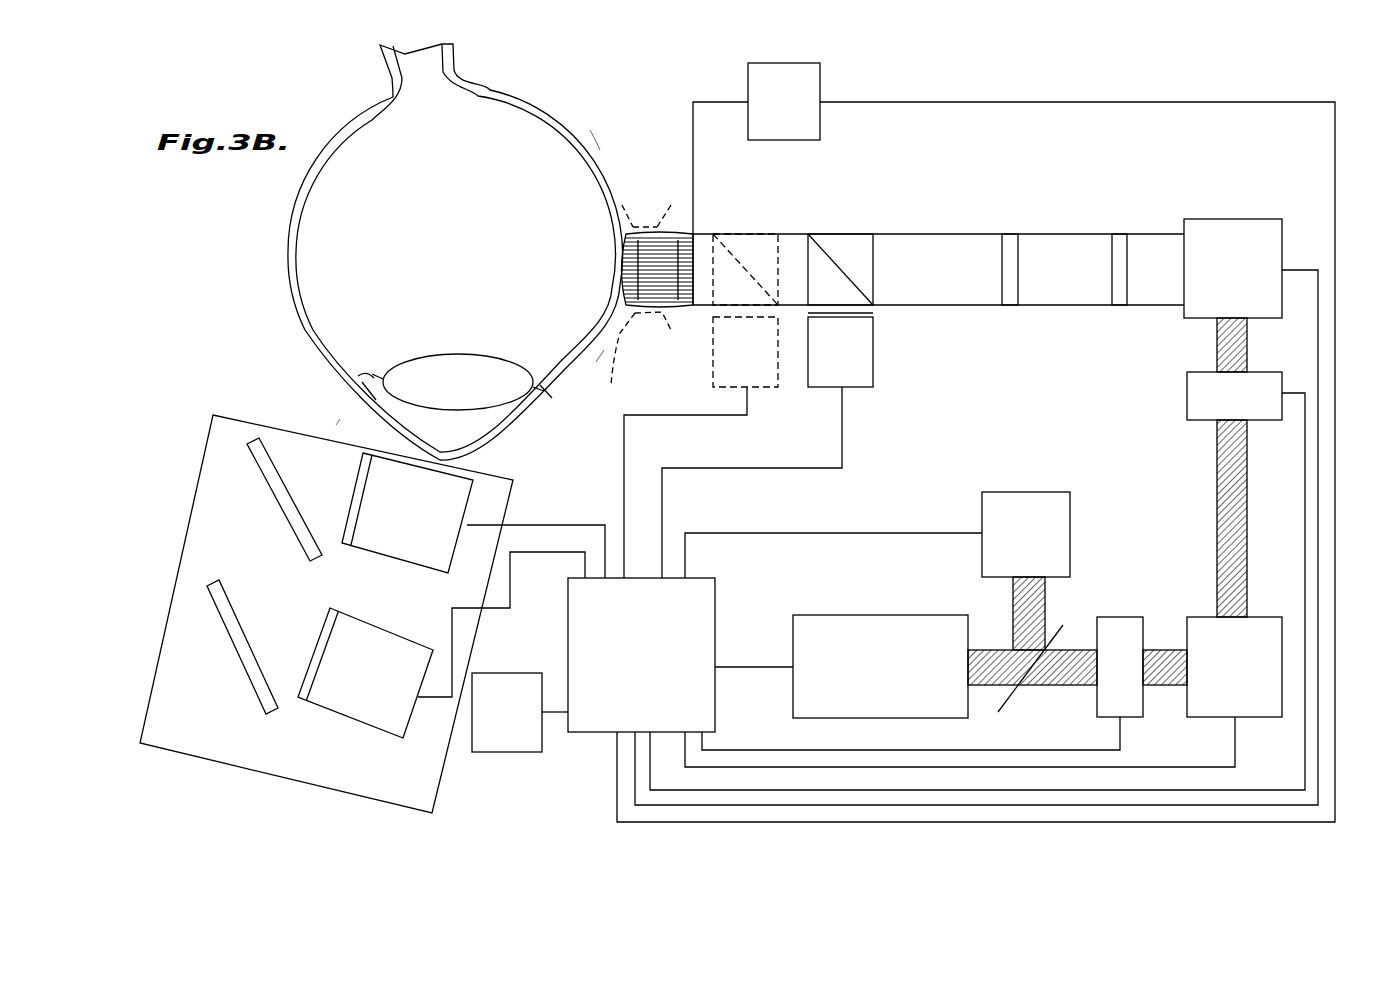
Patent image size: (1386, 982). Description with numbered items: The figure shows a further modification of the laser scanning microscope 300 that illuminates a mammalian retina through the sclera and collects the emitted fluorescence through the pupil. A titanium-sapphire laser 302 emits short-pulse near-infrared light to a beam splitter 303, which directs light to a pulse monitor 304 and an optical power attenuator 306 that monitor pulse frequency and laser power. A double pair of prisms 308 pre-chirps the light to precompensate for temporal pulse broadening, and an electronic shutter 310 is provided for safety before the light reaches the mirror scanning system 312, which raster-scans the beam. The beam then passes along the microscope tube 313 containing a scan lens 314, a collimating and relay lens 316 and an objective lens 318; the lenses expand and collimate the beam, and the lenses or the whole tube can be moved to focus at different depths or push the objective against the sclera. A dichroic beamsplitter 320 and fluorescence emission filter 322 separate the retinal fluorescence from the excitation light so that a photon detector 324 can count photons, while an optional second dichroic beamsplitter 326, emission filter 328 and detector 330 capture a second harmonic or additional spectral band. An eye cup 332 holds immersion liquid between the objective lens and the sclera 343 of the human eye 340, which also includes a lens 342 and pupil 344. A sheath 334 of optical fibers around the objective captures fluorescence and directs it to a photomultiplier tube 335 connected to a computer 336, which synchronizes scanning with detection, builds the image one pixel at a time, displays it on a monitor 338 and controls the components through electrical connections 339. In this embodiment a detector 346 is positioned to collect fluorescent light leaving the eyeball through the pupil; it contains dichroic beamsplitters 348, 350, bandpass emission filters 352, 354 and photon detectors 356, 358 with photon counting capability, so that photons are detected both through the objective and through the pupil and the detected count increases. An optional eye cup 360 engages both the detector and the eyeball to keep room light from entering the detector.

The laser scanning microscope 300 is at (1235, 92).
The titanium-sapphire laser 302 is at (877, 615).
The beam splitter 303 is at (1013, 697).
The pulse monitor 304 is at (1023, 492).
The optical power attenuator 306 is at (1120, 617).
The double pair of prisms 308 is at (1200, 617).
The electronic shutter 310 is at (1187, 393).
The mirror scanning system 312 is at (1242, 225).
The microscope tube 313 is at (1058, 307).
The scan lens 314 is at (1120, 243).
The collimating and relay lens 316 is at (1010, 243).
The objective lens 318 is at (612, 361).
The dichroic beamsplitter 320 is at (842, 270).
The fluorescence emission filter 322 is at (866, 312).
The photon detector 324 is at (875, 368).
The second dichroic beamsplitter 326 is at (738, 258).
The emission filter 328 is at (723, 313).
The detector 330 is at (715, 370).
The eye cup 332 is at (642, 227).
The sheath 334 is at (593, 368).
The photomultiplier tube 335 is at (820, 80).
The computer 336 is at (590, 732).
The monitor 338 is at (512, 753).
The electrical connections 339 is at (1305, 628).
The eye 340 is at (585, 112).
The lens 342 is at (350, 385).
The sclera 343 is at (592, 145).
The pupil 344 is at (523, 427).
The detector 346 is at (192, 486).
The dichroic beamsplitter 348 is at (270, 503).
The dichroic beamsplitter 350 is at (235, 650).
The bandpass emission filter 352 is at (350, 490).
The bandpass emission filter 354 is at (315, 645).
The photon detector 356 is at (408, 560).
The photon detector 358 is at (350, 718).
The eye cup 360 is at (338, 418).